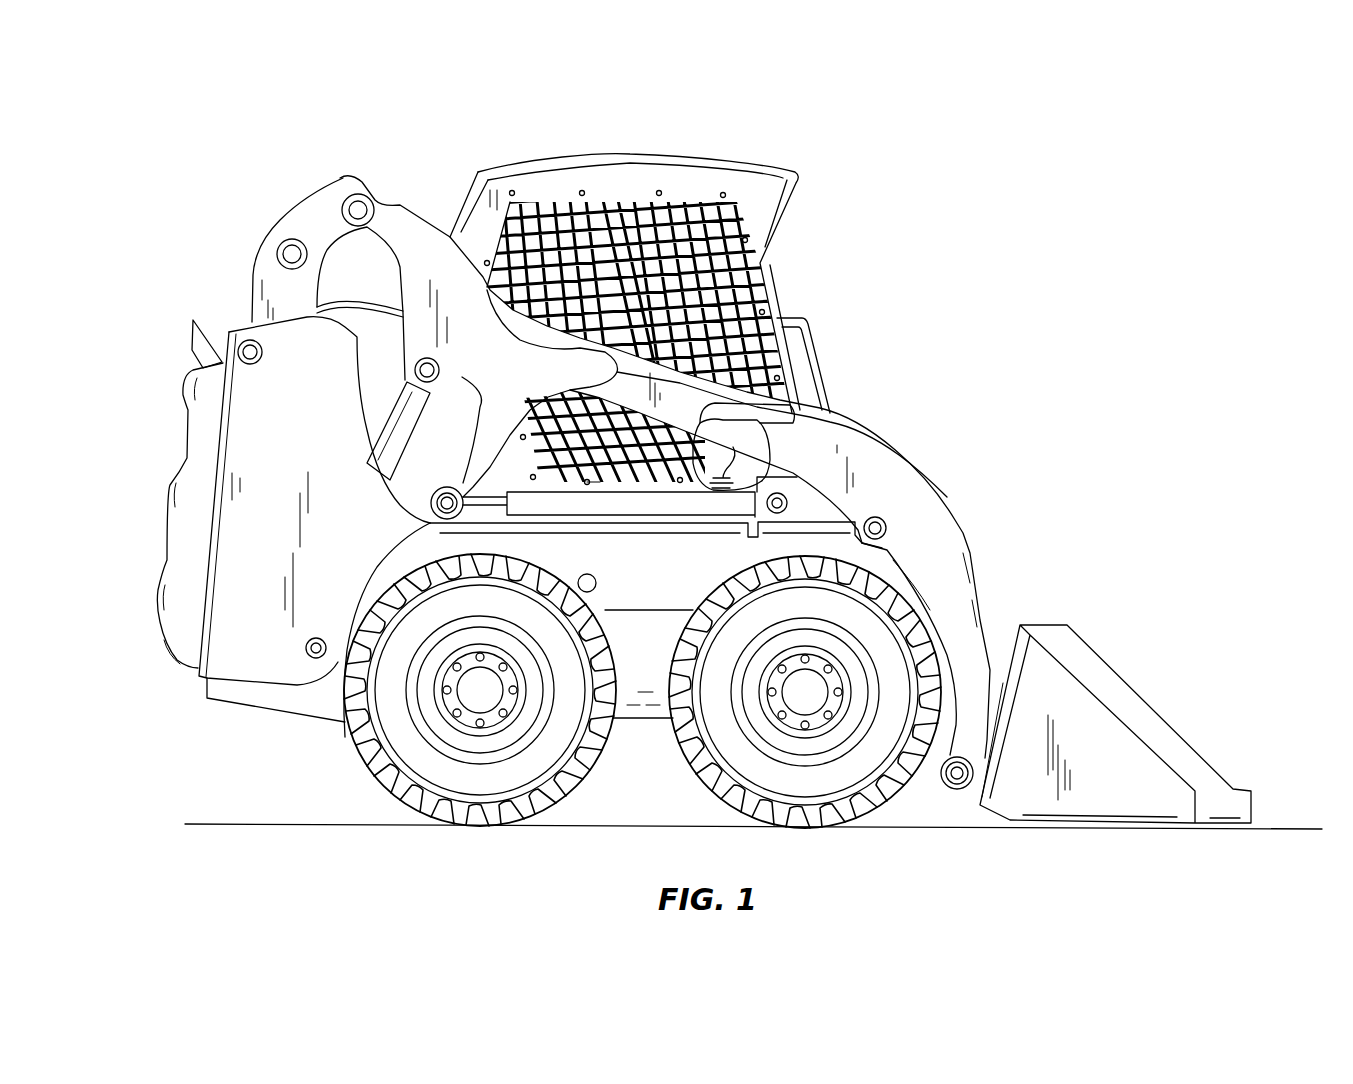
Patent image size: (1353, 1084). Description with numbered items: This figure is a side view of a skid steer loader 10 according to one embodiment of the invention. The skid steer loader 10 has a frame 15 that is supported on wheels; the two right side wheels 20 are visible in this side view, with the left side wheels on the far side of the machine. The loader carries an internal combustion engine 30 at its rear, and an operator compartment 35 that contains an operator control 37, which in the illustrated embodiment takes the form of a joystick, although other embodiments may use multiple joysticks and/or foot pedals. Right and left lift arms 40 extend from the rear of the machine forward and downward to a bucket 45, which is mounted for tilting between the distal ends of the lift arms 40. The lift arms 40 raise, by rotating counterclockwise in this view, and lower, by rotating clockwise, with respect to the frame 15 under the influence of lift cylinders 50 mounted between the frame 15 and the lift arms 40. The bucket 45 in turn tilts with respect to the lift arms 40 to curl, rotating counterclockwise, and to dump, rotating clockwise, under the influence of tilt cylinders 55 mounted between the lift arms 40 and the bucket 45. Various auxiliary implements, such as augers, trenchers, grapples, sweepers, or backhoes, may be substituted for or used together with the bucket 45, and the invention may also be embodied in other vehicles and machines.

The skid steer loader 10 is at (706, 499).
The frame 15 is at (643, 707).
The right side wheels 20 is at (455, 813).
The internal combustion engine 30 is at (257, 607).
The operator compartment 35 is at (680, 182).
The operator control 37 is at (738, 440).
The lift arms 40 is at (683, 387).
The bucket 45 is at (1090, 663).
The lift cylinders 50 is at (393, 437).
The tilt cylinders 55 is at (890, 547).